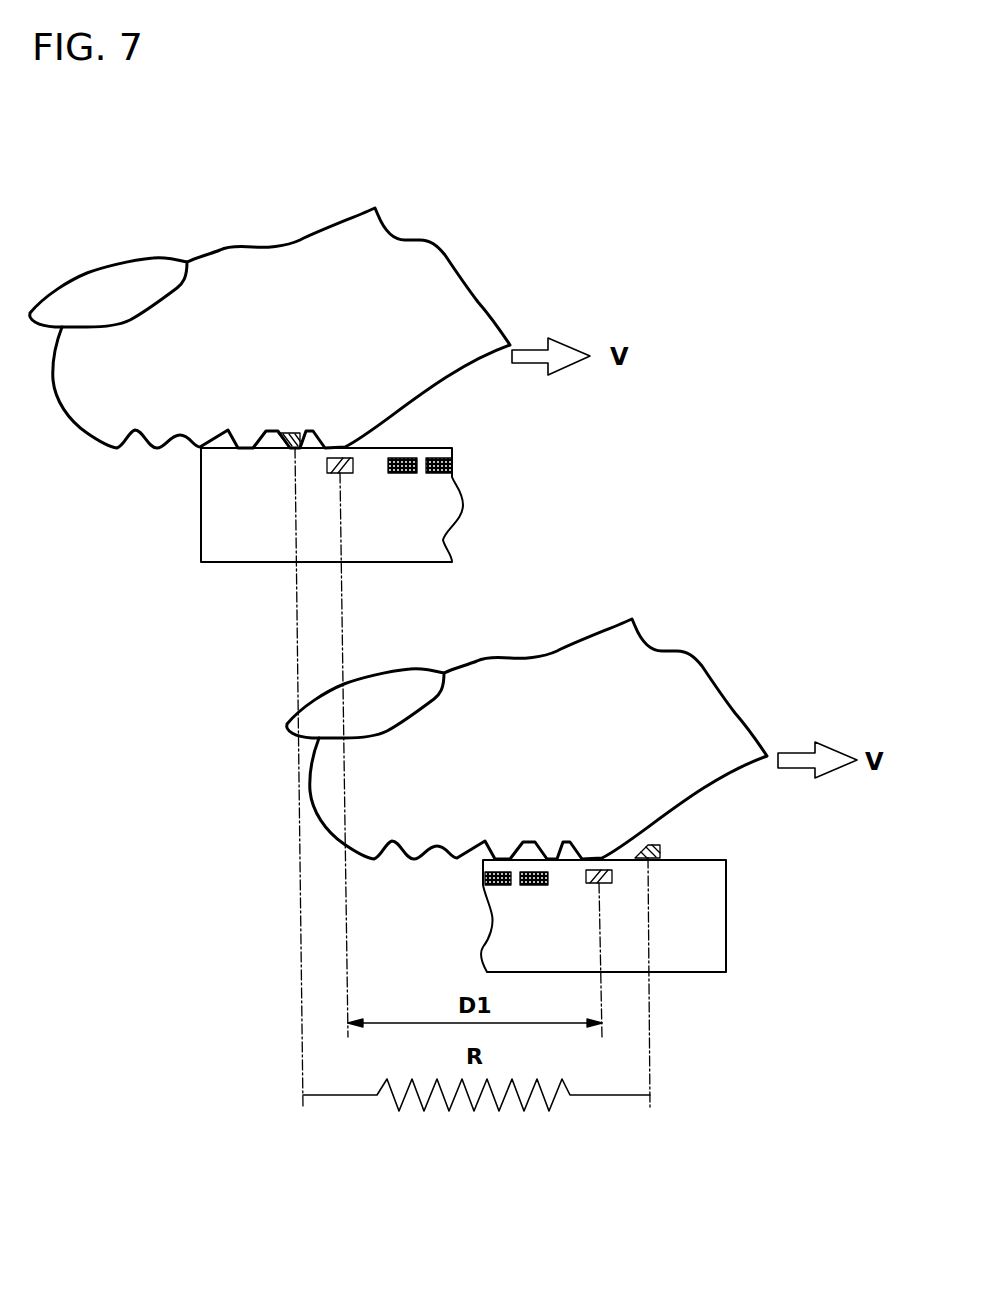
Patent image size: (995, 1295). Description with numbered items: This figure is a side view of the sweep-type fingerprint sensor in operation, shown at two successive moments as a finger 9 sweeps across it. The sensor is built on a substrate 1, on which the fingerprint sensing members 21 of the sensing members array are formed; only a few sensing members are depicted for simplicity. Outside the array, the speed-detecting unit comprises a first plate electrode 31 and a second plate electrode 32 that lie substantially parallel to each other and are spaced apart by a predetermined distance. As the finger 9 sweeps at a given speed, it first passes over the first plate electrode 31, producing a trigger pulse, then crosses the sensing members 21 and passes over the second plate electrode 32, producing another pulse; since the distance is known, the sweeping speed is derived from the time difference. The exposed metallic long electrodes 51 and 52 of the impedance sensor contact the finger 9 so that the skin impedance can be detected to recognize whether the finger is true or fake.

The substrate 1 is at (208, 562).
The finger 9 is at (445, 272).
The fingerprint sensing member 21 is at (408, 457).
The first plate electrode 31 is at (353, 473).
The second plate electrode 32 is at (612, 880).
The electrode 51 is at (275, 450).
The electrode 52 is at (660, 849).